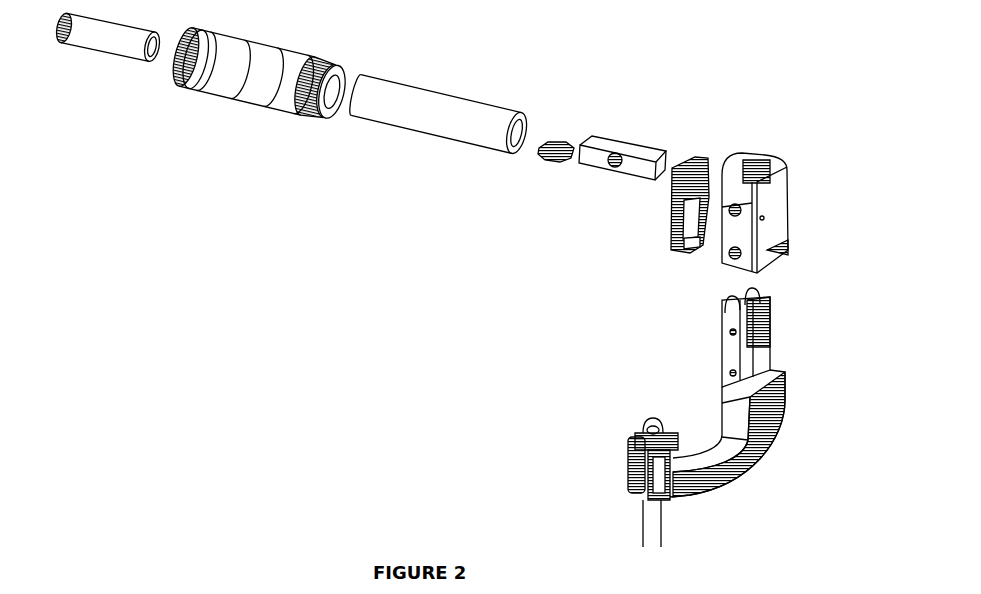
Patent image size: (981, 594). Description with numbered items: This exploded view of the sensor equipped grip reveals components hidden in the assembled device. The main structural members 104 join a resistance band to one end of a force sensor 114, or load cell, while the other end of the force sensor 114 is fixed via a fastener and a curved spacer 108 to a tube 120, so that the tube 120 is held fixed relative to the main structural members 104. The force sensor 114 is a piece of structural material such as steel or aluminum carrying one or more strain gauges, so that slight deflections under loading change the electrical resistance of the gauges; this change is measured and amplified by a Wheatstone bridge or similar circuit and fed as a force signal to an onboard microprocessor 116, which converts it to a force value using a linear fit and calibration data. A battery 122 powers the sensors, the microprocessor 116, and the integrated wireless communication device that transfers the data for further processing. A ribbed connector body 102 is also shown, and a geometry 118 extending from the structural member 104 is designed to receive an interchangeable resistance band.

The ribbed connector body 102 is at (247, 107).
The main structural members 104 is at (780, 370).
The curved spacer 108 is at (563, 138).
The force sensor 114 is at (612, 143).
The onboard microprocessor 116 is at (707, 155).
The geometry 118 is at (627, 450).
The tube 120 is at (418, 130).
The battery 122 is at (110, 53).